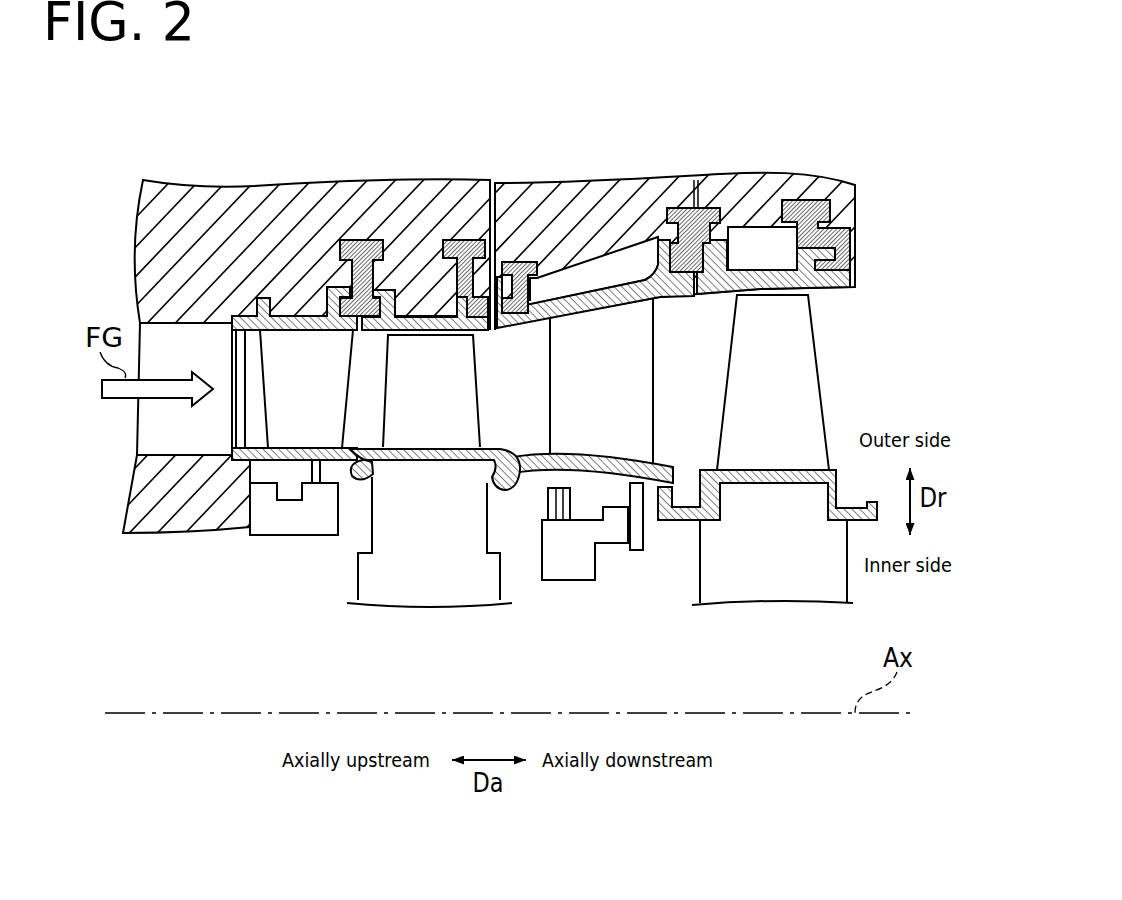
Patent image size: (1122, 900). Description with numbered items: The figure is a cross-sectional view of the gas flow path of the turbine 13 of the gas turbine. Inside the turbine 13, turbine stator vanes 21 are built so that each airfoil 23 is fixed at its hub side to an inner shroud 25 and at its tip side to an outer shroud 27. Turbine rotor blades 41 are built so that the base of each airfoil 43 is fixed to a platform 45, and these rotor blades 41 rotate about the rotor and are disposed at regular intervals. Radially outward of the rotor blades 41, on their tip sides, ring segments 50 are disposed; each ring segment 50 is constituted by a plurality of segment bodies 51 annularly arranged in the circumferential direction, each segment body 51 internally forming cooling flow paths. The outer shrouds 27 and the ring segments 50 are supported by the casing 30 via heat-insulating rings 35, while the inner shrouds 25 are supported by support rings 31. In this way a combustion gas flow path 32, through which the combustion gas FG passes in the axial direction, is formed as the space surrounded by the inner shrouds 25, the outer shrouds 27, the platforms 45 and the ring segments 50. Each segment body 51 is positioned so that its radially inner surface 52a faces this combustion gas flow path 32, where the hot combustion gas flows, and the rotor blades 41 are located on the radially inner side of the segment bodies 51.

The turbine 13 is at (731, 114).
The turbine stator vane 21 is at (262, 371).
The airfoil 23 is at (283, 356).
The inner shroud 25 is at (230, 520).
The outer shroud 27 is at (294, 327).
The casing 30 is at (420, 256).
The support ring 31 is at (287, 522).
The combustion gas flow path 32 is at (172, 342).
The heat-insulating ring 35 is at (345, 242).
The turbine rotor blade 41 is at (378, 395).
The airfoil 43 is at (442, 430).
The platform 45 is at (395, 463).
The ring segment 50 is at (659, 220).
The segment body 51 is at (455, 318).
The inner surface 52a is at (815, 297).